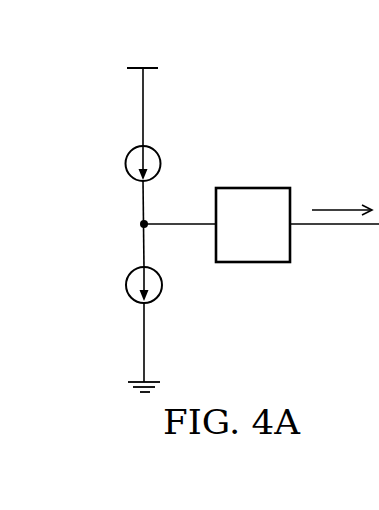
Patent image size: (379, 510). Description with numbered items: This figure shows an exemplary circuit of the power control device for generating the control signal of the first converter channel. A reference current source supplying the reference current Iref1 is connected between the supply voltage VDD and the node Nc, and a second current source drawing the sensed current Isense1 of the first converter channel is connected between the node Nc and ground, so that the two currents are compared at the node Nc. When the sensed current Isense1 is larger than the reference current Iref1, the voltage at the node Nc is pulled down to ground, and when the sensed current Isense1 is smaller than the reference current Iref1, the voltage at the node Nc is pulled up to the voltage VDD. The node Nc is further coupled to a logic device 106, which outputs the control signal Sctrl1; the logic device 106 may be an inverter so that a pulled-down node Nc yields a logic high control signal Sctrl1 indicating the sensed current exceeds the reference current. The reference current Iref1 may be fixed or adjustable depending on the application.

The logic device 106 is at (242, 188).
The voltage VDD is at (141, 93).
The reference current Iref1 is at (121, 163).
The node Nc is at (163, 224).
The sensed current Isense1 is at (112, 286).
The control signal Sctrl1 is at (334, 201).